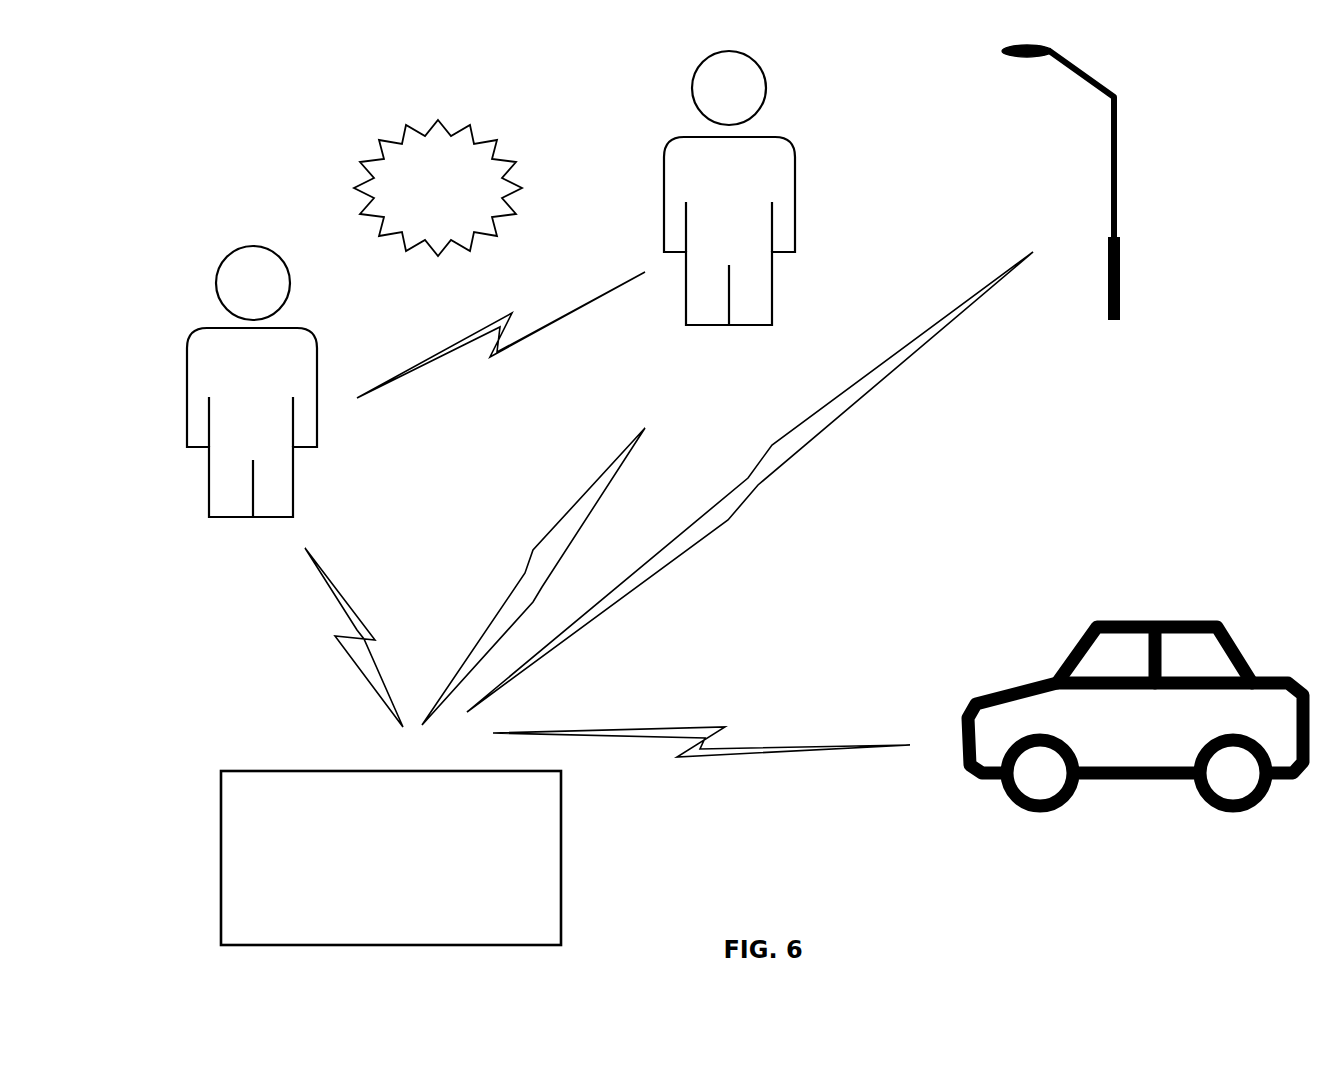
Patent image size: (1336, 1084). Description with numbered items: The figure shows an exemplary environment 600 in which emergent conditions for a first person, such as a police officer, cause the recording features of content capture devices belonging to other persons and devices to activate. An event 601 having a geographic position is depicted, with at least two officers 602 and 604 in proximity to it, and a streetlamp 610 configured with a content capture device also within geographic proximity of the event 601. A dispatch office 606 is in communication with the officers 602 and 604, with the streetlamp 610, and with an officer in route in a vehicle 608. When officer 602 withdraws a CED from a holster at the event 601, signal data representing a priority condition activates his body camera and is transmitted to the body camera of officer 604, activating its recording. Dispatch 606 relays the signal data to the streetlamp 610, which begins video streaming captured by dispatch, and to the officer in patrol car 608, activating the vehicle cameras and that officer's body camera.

The environment 600 is at (562, 401).
The event 601 is at (438, 188).
The officer 602 is at (252, 381).
The officer 604 is at (729, 188).
The dispatch office 606 is at (391, 858).
The vehicle 608 is at (1135, 716).
The streetlamp 610 is at (1095, 182).